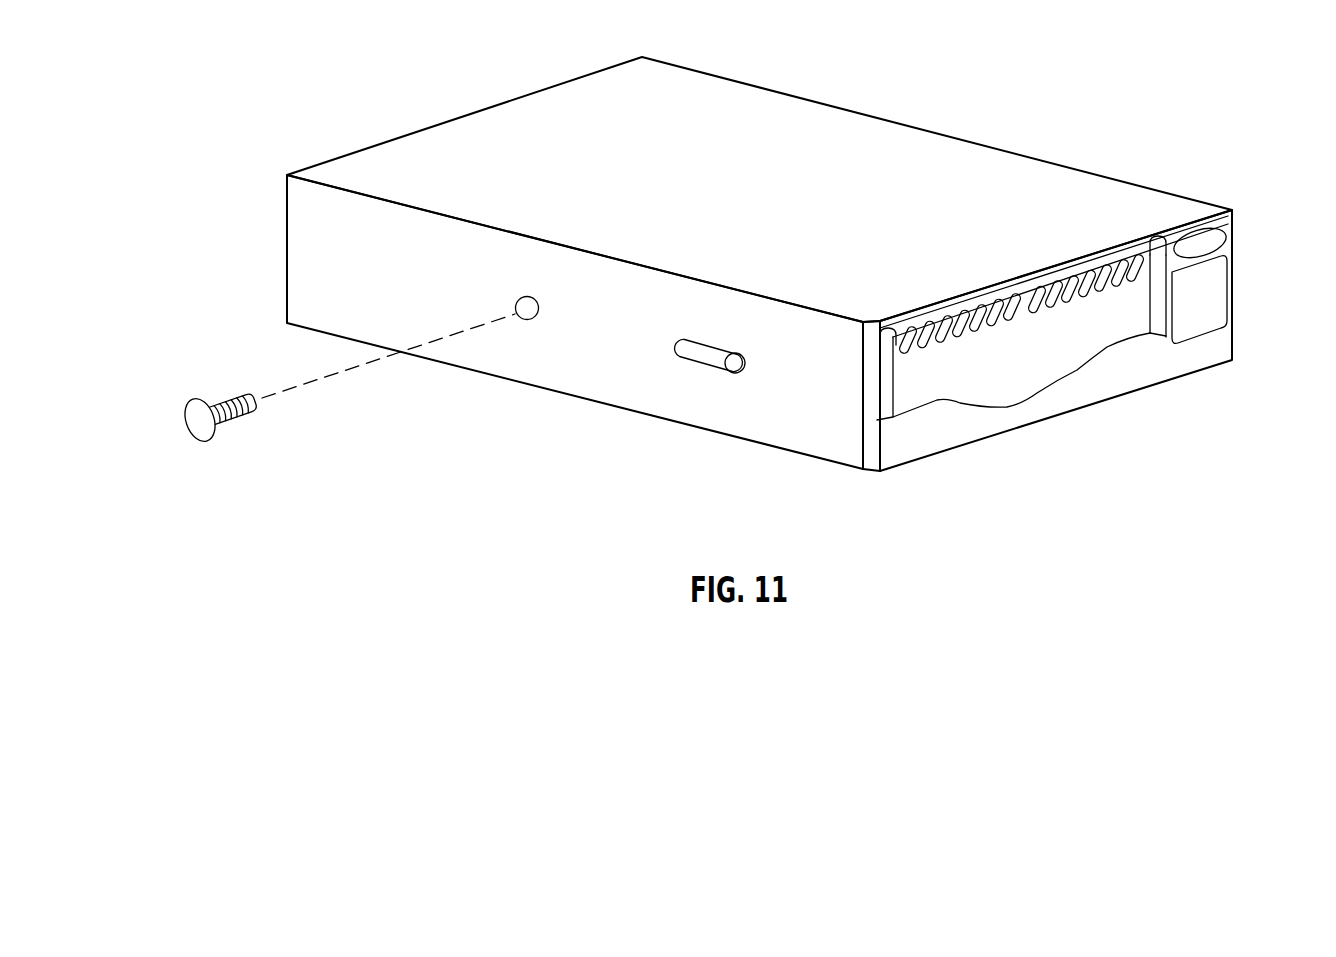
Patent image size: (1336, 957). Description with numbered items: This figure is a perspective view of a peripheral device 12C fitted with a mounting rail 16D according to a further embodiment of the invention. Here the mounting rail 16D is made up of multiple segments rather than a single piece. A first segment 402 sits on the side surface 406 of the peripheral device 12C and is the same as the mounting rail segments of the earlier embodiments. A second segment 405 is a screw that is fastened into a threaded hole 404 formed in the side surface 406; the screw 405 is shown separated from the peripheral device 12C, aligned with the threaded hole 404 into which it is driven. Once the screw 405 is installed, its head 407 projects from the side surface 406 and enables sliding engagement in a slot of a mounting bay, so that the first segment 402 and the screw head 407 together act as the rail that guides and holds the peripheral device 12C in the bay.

The mounting rail 16D is at (627, 307).
The peripheral device 12C is at (1240, 298).
The side surface 406 is at (592, 361).
The threaded hole 404 is at (428, 369).
The first segment 402 is at (738, 419).
The second segment 405 is at (198, 387).
The head 407 is at (163, 444).